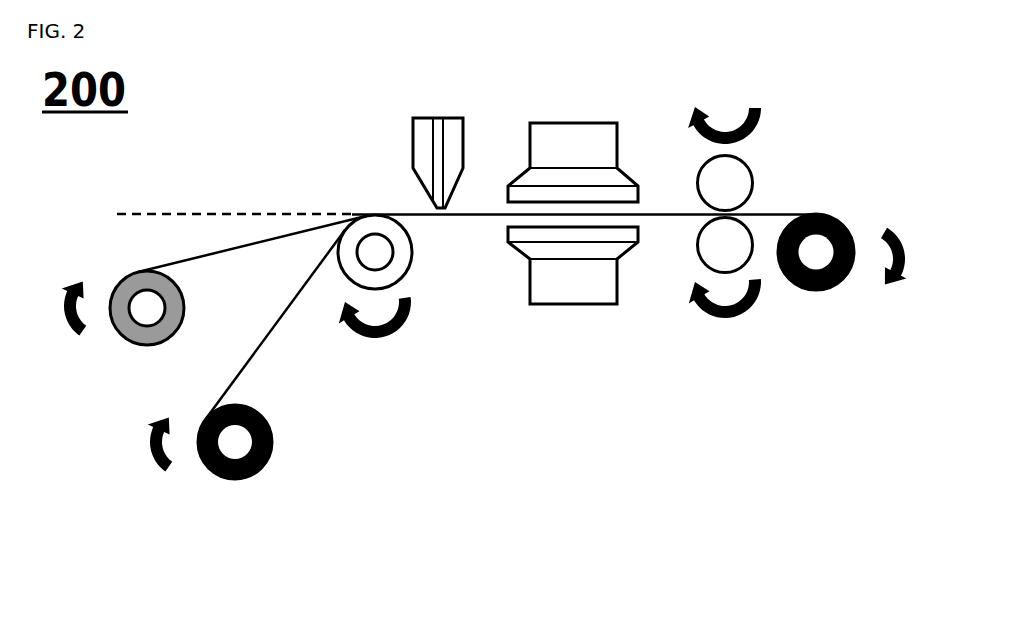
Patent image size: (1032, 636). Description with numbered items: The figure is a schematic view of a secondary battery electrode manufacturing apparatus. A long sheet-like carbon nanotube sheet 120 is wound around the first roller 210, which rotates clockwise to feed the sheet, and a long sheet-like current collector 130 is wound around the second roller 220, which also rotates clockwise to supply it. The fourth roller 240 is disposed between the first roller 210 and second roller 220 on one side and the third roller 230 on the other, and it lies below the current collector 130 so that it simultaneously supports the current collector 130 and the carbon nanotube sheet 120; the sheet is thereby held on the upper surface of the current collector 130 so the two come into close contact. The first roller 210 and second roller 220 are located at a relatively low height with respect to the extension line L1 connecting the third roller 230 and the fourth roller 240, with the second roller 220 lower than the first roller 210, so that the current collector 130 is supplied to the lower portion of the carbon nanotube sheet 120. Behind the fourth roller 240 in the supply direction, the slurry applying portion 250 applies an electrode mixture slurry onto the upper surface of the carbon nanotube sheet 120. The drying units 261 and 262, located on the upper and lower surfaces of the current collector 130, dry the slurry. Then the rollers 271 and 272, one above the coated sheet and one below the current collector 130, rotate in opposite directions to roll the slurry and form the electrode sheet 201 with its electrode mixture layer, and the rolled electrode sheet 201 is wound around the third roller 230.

The extension line L1 is at (146, 210).
The electrode sheet 201 is at (769, 209).
The carbon nanotube sheet 120 is at (188, 260).
The current collector 130 is at (275, 325).
The first roller 210 is at (134, 352).
The second roller 220 is at (233, 489).
The fourth roller 240 is at (429, 276).
The slurry applying portion 250 is at (413, 118).
The drying unit 261 is at (550, 122).
The drying unit 262 is at (548, 305).
The first roller 271 is at (698, 180).
The second roller 272 is at (697, 250).
The third roller 230 is at (818, 304).